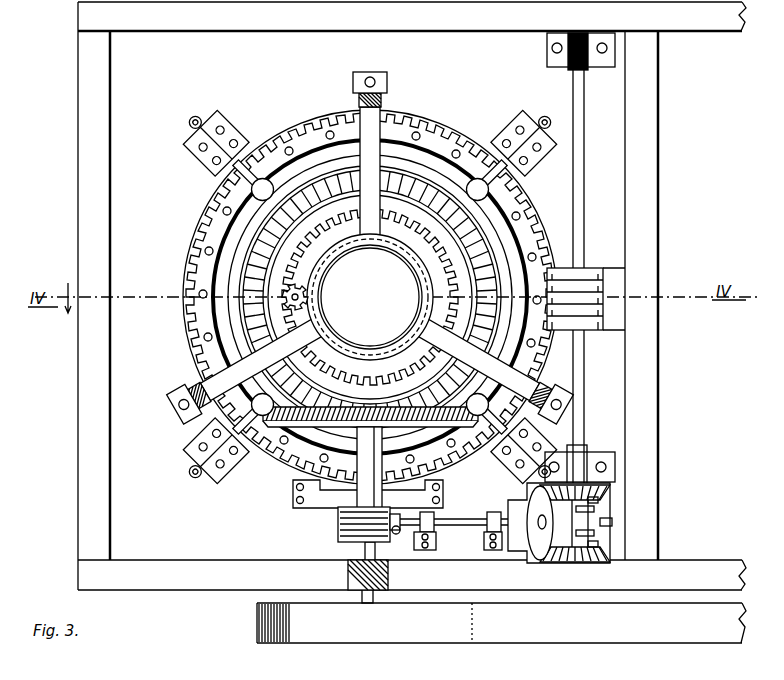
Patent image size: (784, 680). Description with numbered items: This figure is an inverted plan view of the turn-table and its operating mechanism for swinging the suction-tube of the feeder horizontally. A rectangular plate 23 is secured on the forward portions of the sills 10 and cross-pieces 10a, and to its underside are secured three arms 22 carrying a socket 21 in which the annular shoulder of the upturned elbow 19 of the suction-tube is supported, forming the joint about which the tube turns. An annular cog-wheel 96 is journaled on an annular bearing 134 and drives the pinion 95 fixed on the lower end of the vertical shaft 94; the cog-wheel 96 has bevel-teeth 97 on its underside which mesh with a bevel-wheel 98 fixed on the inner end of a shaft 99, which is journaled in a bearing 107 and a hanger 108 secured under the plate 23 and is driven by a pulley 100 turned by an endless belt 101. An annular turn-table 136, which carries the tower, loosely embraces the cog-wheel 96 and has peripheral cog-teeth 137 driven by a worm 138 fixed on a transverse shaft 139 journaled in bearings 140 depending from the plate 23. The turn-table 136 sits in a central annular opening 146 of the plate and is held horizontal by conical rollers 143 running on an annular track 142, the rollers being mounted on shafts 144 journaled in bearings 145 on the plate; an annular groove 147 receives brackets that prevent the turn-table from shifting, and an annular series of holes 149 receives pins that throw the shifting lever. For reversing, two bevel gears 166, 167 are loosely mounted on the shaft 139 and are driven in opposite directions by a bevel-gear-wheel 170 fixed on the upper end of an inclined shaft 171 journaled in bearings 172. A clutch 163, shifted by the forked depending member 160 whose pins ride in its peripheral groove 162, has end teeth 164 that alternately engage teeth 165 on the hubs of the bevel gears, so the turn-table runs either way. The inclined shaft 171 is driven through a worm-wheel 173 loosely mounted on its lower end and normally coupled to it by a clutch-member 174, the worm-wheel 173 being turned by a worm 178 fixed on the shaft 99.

The sills 10 is at (412, 296).
The cross-pieces 10a is at (668, 251).
The upturned elbow 19 is at (322, 273).
The socket 21 is at (352, 245).
The arms 22 is at (356, 93).
The rectangular plate 23 is at (147, 85).
The vertical shaft 94 is at (307, 298).
The pinion 95 is at (318, 307).
The annular cog-wheel 96 is at (330, 370).
The bevel-teeth 97 is at (408, 175).
The bevel-wheel 98 is at (270, 430).
The shaft 99 is at (362, 549).
The pulley 100 is at (472, 641).
The endless belt 101 is at (501, 623).
The bearing 107 is at (348, 578).
The hanger 108 is at (368, 494).
The annular bearing 134 is at (300, 231).
The annular turn-table 136 is at (194, 303).
The cog-teeth 137 is at (190, 317).
The worm 138 is at (604, 315).
The transverse shaft 139 is at (584, 219).
The bearings 140 is at (547, 56).
The annular track 142 is at (233, 231).
The conical rollers 143 is at (250, 181).
The shafts 144 is at (197, 124).
The bearings 145 is at (207, 148).
The annular opening 146 is at (194, 338).
The annular groove 147 is at (198, 266).
The holes 149 is at (325, 129).
The forked depending member 160 is at (611, 521).
The peripheral groove 162 is at (560, 521).
The clutch 163 is at (594, 511).
The teeth 164 is at (594, 532).
The teeth 165 is at (592, 500).
The bevel gear 166 is at (600, 562).
The bevel gear 167 is at (587, 502).
The bevel-gear-wheel 170 is at (537, 552).
The inclined shaft 171 is at (459, 515).
The bearings 172 is at (433, 531).
The worm-wheel 173 is at (338, 522).
The clutch-member 174 is at (422, 578).
The worm 178 is at (396, 534).